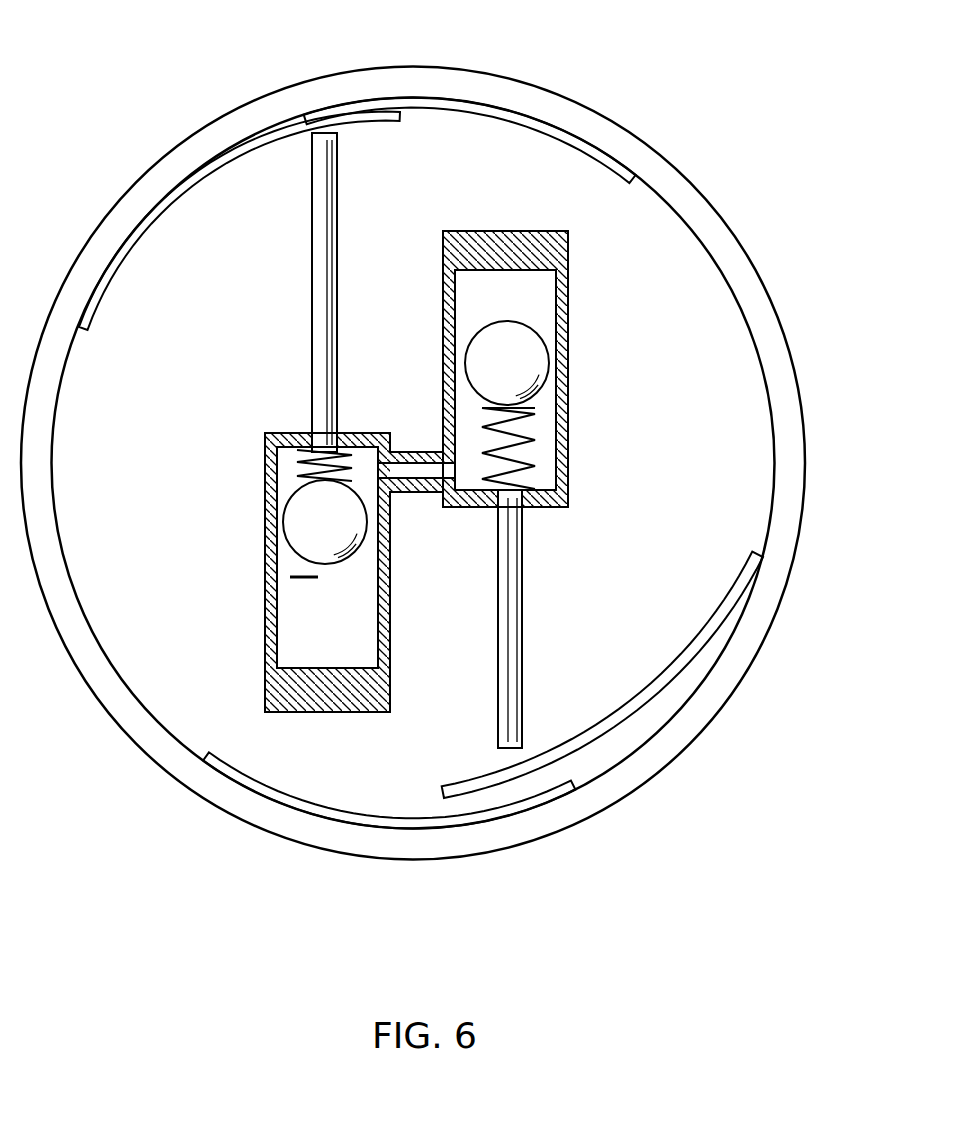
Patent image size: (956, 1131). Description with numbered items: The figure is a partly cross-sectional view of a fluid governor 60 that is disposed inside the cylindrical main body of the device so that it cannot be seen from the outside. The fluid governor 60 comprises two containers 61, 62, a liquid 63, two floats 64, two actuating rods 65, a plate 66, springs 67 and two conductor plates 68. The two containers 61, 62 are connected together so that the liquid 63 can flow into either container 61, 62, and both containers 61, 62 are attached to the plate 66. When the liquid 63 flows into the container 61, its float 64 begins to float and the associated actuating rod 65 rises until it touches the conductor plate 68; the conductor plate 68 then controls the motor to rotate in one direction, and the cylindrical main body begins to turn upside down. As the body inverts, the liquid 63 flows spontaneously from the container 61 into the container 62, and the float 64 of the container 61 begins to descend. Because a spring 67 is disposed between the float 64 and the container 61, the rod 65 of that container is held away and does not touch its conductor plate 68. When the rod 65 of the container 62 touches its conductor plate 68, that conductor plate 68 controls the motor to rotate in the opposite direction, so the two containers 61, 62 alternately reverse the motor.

The fluid governor 60 is at (597, 404).
The container 61 is at (321, 572).
The container 62 is at (553, 507).
The liquid 63 is at (315, 607).
The float 64 is at (305, 514).
The actuating rod 65 is at (323, 220).
The plate 66 is at (745, 513).
The spring 67 is at (292, 440).
The conductor plate 68 is at (340, 115).